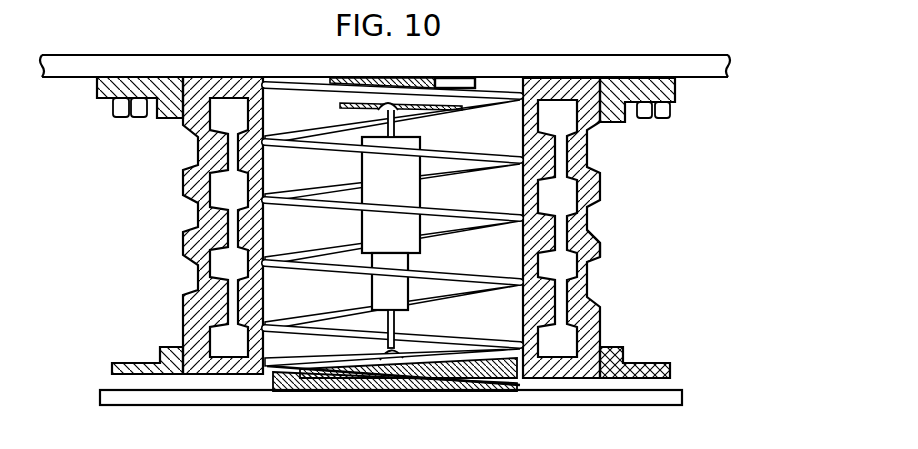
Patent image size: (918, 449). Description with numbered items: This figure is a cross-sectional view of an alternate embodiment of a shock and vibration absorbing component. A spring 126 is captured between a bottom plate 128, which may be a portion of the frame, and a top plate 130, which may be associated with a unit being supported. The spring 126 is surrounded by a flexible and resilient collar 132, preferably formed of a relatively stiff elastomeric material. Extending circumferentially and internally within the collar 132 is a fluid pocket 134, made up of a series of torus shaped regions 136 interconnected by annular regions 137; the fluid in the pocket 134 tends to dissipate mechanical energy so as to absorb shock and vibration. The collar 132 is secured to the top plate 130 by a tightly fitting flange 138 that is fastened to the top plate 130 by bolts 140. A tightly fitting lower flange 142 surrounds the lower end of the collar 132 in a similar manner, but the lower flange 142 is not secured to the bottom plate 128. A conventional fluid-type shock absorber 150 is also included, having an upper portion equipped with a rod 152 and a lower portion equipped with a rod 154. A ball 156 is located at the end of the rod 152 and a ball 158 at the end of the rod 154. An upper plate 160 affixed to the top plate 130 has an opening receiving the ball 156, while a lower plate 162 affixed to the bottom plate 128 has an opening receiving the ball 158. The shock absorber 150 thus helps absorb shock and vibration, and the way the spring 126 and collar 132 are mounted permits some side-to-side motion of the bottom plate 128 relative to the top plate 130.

The spring 126 is at (332, 212).
The bottom plate 128 is at (479, 396).
The top plate 130 is at (250, 28).
The collar 132 is at (598, 172).
The fluid pocket 134 is at (580, 249).
The torus shaped regions 136 is at (565, 110).
The annular regions 137 is at (522, 140).
The flange 138 is at (677, 92).
The bolts 140 is at (122, 114).
The lower flange 142 is at (622, 350).
The shock absorber 150 is at (362, 175).
The rod 152 is at (396, 119).
The rod 154 is at (394, 315).
The ball 156 is at (356, 104).
The ball 158 is at (398, 362).
The upper plate 160 is at (438, 73).
The lower plate 162 is at (324, 395).